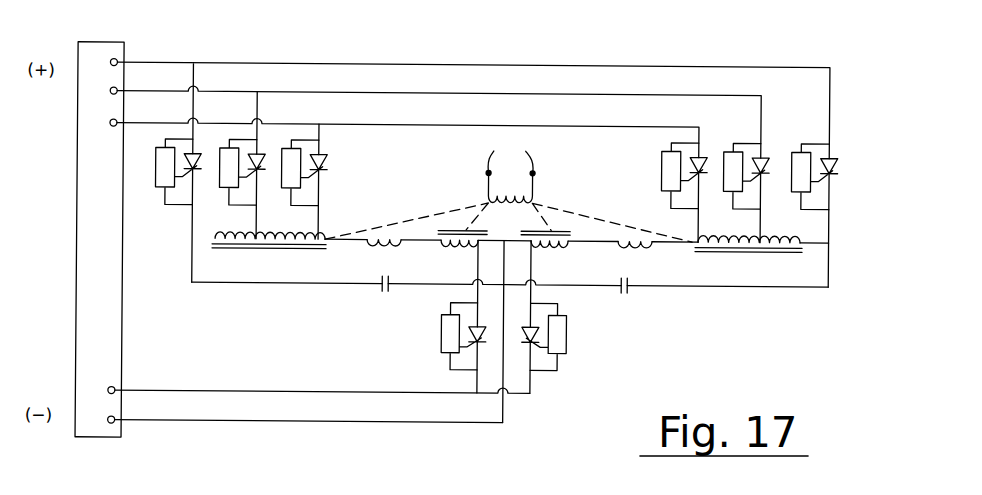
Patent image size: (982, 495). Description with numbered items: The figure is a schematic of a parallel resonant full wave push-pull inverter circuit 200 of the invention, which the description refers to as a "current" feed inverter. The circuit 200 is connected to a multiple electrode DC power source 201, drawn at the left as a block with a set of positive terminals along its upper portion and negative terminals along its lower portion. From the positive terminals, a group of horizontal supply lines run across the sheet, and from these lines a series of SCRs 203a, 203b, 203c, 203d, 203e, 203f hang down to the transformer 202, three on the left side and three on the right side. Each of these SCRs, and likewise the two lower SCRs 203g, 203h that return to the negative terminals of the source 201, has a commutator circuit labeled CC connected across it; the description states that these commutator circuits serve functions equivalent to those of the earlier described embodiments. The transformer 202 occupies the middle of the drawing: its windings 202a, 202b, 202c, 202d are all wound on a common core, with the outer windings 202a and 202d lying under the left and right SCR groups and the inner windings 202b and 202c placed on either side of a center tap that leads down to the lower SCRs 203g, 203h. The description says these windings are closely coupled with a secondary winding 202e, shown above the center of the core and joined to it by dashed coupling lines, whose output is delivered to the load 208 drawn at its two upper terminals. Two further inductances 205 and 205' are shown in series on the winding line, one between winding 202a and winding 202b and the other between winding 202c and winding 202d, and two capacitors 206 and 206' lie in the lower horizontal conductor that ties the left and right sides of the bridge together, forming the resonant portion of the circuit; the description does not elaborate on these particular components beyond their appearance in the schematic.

The parallel resonant full wave push-pull current feed inverter circuit 200 is at (640, 330).
The multiple electrode DC power source 201 is at (76, 248).
The transformer 202 is at (548, 212).
The transformer winding 202a is at (273, 251).
The transformer winding 202b is at (458, 248).
The transformer winding 202c is at (547, 248).
The transformer winding 202d is at (800, 240).
The secondary winding 202e is at (488, 194).
The SCR 203a is at (196, 156).
The SCR 203b is at (260, 156).
The SCR 203c is at (327, 156).
The SCR 203d is at (701, 156).
The SCR 203e is at (763, 156).
The SCR 203f is at (832, 156).
The SCR 203g is at (482, 340).
The SCR 203h is at (528, 340).
The inductor 205 is at (365, 220).
The inductor 205' is at (622, 217).
The capacitor 206 is at (341, 301).
The capacitor 206' is at (664, 302).
The load 208 is at (510, 153).